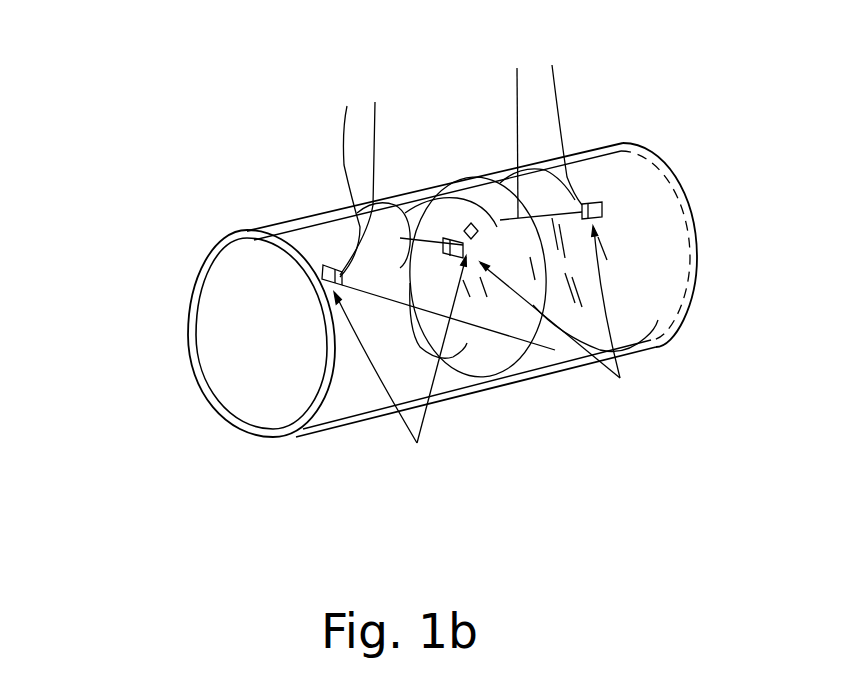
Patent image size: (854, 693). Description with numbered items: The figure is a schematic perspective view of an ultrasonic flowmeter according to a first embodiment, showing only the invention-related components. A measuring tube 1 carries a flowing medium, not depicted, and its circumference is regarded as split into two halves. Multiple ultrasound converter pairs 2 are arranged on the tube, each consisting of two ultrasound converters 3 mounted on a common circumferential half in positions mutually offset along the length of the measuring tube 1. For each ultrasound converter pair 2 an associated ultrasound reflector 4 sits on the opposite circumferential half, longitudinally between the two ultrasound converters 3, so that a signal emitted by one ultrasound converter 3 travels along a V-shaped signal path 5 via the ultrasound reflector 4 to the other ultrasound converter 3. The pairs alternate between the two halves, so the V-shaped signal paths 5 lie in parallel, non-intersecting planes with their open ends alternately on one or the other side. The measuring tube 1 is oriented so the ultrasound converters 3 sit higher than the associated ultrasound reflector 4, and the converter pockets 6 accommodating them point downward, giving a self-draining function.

The measuring tube 1 is at (217, 341).
The ultrasound converter pair 2 is at (483, 349).
The ultrasound converter 3 is at (460, 156).
The ultrasound reflector 4 is at (405, 200).
The V-shaped signal path 5 is at (575, 200).
The converter pocket 6 is at (323, 266).